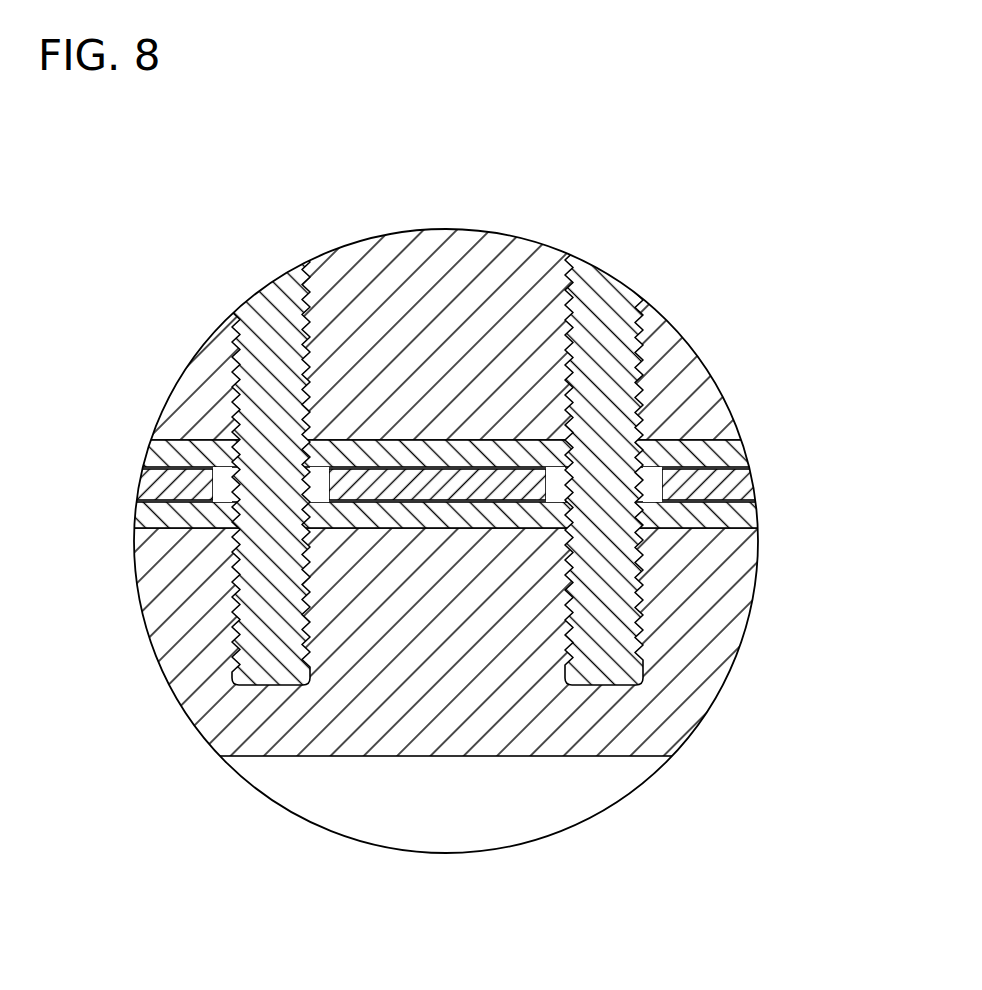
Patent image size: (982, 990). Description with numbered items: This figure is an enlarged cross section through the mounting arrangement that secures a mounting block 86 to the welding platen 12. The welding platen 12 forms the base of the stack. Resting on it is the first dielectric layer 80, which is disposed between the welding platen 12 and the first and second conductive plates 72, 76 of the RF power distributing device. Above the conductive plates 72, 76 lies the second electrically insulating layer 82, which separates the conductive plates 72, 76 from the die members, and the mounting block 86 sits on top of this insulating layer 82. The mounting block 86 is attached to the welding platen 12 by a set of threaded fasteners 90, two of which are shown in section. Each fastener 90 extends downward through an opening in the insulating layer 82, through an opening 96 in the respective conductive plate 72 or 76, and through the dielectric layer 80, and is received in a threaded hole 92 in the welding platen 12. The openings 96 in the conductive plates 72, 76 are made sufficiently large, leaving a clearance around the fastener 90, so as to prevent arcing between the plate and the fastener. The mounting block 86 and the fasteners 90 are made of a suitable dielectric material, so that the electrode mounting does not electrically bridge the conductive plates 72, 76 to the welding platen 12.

The welding platen 12 is at (727, 722).
The first conductive plate 72 is at (449, 478).
The second conductive plate 76 is at (747, 488).
The first dielectric layer 80 is at (750, 517).
The second electrically insulating layer 82 is at (737, 453).
The mounting block 86 is at (687, 353).
The threaded fastener 90 is at (270, 300).
The threaded hole 92 is at (640, 580).
The opening 96 is at (225, 490).